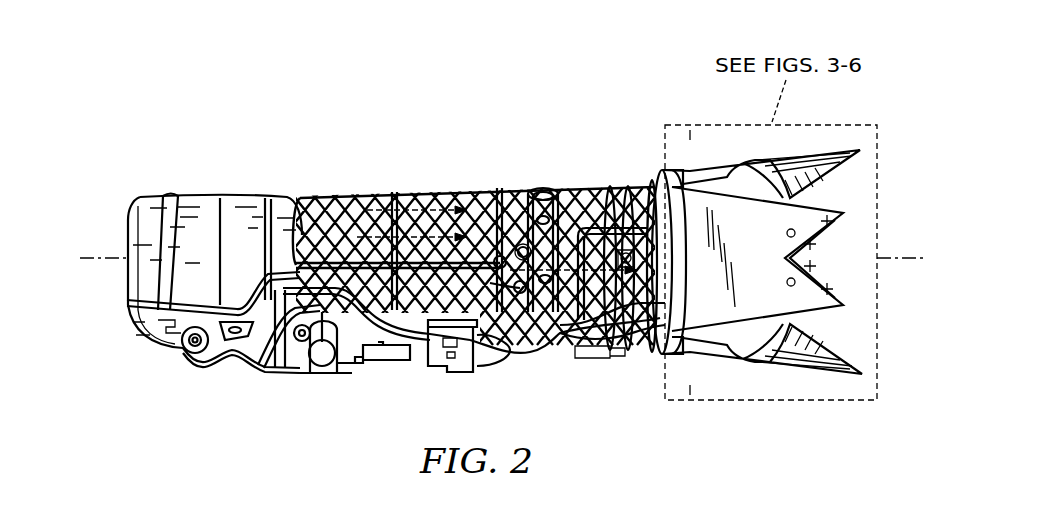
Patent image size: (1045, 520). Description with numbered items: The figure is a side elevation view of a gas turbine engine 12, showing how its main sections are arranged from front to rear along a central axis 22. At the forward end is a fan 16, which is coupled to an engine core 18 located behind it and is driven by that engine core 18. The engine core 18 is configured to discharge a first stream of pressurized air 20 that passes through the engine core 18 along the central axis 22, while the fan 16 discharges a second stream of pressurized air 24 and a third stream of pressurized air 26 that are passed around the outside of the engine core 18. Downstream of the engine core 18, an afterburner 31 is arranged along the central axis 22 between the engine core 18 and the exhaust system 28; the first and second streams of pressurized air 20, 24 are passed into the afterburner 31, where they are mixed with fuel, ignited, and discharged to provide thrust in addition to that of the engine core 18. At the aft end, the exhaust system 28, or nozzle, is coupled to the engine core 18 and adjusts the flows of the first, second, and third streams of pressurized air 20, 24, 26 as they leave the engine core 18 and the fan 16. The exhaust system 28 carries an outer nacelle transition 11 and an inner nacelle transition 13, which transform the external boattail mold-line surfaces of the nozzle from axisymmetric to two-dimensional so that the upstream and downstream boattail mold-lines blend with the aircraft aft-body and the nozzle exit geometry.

The outer nacelle transition 11 is at (792, 137).
The gas turbine engine 12 is at (497, 176).
The inner nacelle transition 13 is at (792, 390).
The fan 16 is at (213, 194).
The engine core 18 is at (440, 192).
The first stream of pressurized air 20 is at (560, 333).
The central axis 22 is at (83, 258).
The second stream of pressurized air 24 is at (345, 199).
The third stream of pressurized air 26 is at (395, 192).
The exhaust system 28 is at (678, 174).
The afterburner 31 is at (592, 250).